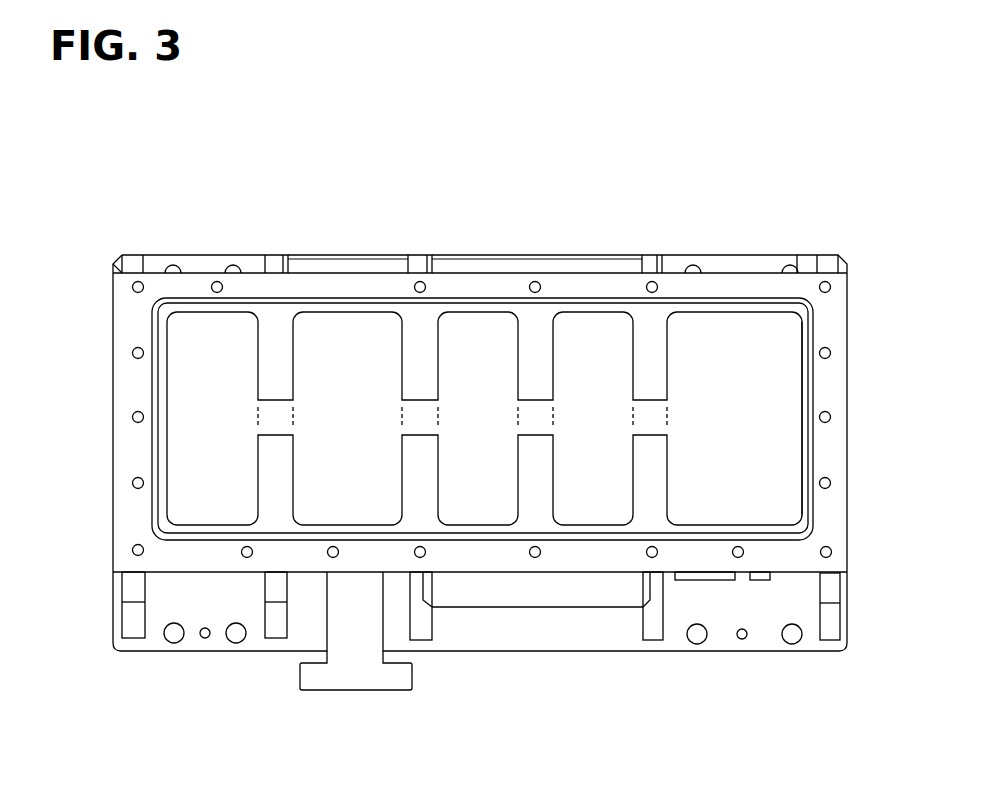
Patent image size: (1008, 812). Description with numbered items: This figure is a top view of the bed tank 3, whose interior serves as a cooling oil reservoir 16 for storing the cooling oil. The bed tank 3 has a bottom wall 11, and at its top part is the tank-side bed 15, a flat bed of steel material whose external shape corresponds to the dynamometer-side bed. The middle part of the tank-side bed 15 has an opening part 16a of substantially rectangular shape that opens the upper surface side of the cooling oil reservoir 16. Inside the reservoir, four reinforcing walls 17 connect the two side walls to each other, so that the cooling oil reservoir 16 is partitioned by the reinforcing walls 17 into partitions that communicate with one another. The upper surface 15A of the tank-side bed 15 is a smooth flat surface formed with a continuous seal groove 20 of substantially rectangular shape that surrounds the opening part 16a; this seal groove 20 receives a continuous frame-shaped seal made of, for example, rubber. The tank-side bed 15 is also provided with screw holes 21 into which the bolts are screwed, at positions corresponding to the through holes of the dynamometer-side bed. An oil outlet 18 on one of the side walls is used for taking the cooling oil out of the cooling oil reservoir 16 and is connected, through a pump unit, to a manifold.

The bed tank 3 is at (133, 210).
The bottom wall 11 is at (155, 650).
The tank-side bed 15 is at (113, 385).
The upper surface 15A is at (130, 312).
The cooling oil reservoir 16 is at (730, 322).
The opening part 16a is at (758, 365).
The reinforcing walls 17 is at (275, 360).
The oil outlet 18 is at (342, 680).
The seal groove 20 is at (195, 298).
The screw holes 21 is at (217, 282).